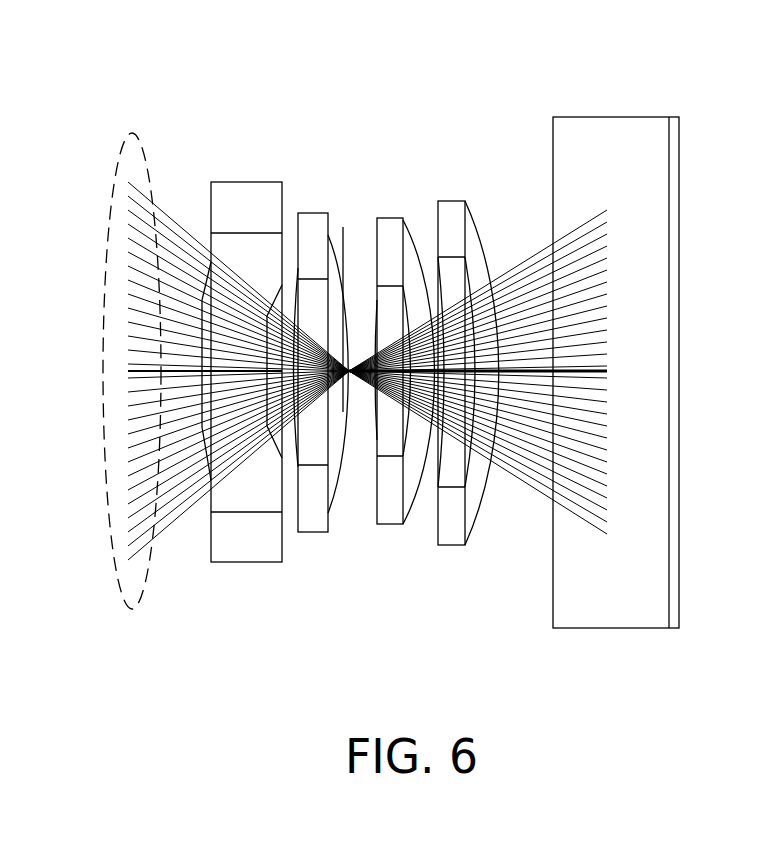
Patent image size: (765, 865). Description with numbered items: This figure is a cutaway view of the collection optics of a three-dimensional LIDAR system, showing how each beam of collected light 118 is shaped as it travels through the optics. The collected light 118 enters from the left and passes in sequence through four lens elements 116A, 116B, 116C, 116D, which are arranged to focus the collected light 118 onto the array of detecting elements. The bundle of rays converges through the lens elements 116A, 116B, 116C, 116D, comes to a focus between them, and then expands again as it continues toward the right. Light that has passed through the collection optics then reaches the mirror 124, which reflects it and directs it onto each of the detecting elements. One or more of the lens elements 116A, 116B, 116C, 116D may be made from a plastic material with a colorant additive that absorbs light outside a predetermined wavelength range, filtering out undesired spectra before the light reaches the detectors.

The collected light 118 is at (112, 181).
The lens element 116A is at (246, 183).
The lens element 116B is at (312, 213).
The lens element 116C is at (381, 218).
The lens element 116D is at (444, 201).
The mirror 124 is at (600, 117).